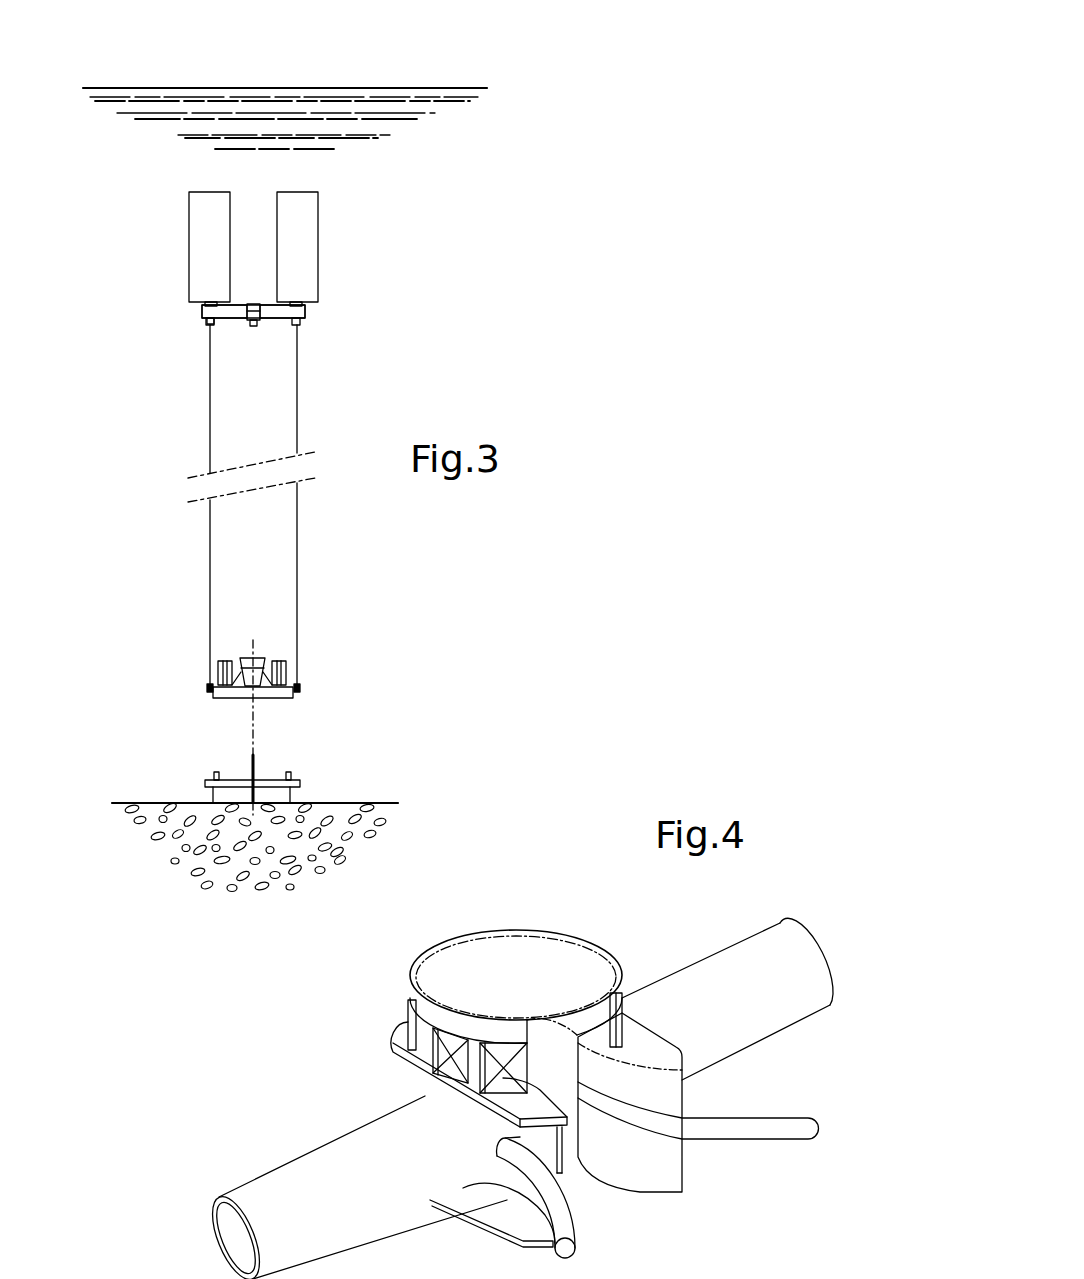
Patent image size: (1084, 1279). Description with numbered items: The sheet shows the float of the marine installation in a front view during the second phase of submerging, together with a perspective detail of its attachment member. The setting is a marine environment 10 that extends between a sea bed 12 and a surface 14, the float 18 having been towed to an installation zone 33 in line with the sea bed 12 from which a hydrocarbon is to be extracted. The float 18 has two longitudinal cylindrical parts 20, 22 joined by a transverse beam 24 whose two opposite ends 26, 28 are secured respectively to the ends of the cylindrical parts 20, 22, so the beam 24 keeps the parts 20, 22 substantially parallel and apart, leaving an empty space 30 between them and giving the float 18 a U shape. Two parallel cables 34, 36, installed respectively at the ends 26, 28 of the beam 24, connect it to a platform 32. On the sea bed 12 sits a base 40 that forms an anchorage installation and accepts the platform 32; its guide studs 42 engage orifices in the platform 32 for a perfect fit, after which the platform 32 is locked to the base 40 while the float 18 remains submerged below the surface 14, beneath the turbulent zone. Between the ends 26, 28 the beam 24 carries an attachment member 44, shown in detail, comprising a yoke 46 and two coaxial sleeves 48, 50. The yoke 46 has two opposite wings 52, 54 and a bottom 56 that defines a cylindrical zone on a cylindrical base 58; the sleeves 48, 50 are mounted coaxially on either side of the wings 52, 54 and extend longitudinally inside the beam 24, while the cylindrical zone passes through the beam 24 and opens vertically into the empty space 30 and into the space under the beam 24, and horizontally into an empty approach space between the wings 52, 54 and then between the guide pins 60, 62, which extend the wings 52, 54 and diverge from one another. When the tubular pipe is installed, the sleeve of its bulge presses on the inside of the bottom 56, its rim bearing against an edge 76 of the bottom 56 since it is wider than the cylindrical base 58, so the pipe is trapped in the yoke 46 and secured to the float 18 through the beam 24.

In FIG. 3, the marine environment 10 is at (260, 570).
In FIG. 3, the sea bed 12 is at (140, 803).
In FIG. 3, the surface 14 is at (213, 88).
In FIG. 3, the float 18 is at (225, 284).
In FIG. 3, the longitudinal cylindrical part 20 is at (197, 220).
In FIG. 3, the longitudinal cylindrical part 22 is at (303, 220).
In FIG. 3, the transverse beam 24 is at (216, 323).
In FIG. 3, the end of the beam 26 is at (202, 313).
In FIG. 3, the end of the beam 28 is at (305, 312).
In FIG. 3, the empty space 30 is at (255, 244).
In FIG. 3, the platform 32 is at (272, 698).
In FIG. 3, the installation zone 33 is at (270, 60).
In FIG. 3, the cable 34 is at (210, 437).
In FIG. 3, the cable 36 is at (298, 408).
In FIG. 3, the base 40 is at (233, 792).
In FIG. 3, the guide stud 42 is at (292, 776).
In FIG. 3, the attachment member 44 is at (251, 327).
In FIG. 4, the attachment member 44 is at (486, 940).
In FIG. 4, the yoke 46 is at (420, 1037).
In FIG. 4, the coaxial sleeve 48 is at (308, 1170).
In FIG. 4, the coaxial sleeve 50 is at (745, 952).
In FIG. 4, the wing 52 is at (517, 1188).
In FIG. 4, the wing 54 is at (665, 1163).
In FIG. 4, the bottom 56 is at (508, 972).
In FIG. 4, the cylindrical base 58 is at (460, 988).
In FIG. 4, the guide pin 60 is at (779, 1125).
In FIG. 4, the guide pin 62 is at (577, 1217).
In FIG. 4, the edge 76 is at (568, 935).